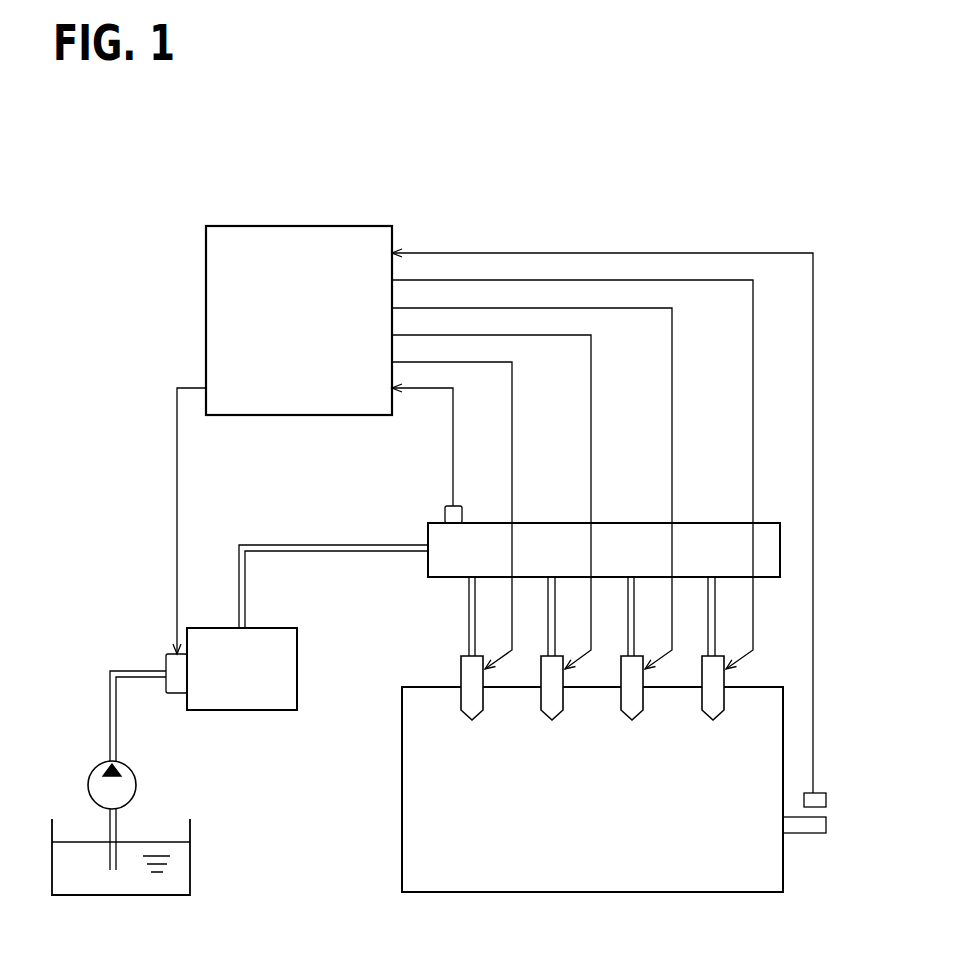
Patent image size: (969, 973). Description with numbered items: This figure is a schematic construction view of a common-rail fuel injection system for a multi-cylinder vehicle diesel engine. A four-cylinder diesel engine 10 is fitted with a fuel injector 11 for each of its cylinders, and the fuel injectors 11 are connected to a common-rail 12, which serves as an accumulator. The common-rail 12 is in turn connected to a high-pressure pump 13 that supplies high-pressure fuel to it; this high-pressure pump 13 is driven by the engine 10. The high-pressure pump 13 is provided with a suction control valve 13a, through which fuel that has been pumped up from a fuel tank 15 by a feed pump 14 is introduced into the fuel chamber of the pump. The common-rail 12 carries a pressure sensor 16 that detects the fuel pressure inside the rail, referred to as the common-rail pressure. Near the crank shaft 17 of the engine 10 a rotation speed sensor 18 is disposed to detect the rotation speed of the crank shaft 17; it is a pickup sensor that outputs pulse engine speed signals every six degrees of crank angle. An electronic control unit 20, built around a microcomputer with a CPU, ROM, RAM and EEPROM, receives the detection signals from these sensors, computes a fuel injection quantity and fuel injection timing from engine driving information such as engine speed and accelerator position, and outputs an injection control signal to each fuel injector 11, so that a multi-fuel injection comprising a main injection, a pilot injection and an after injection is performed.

The diesel engine 10 is at (730, 893).
The fuel injector 11 is at (472, 722).
The common-rail 12 is at (697, 523).
The high-pressure pump 13 is at (297, 640).
The suction control valve 13a is at (166, 660).
The feed pump 14 is at (136, 778).
The fuel tank 15 is at (190, 826).
The pressure sensor 16 is at (445, 508).
The crank shaft 17 is at (812, 834).
The rotation speed sensor 18 is at (813, 792).
The electronic control unit 20 is at (358, 225).